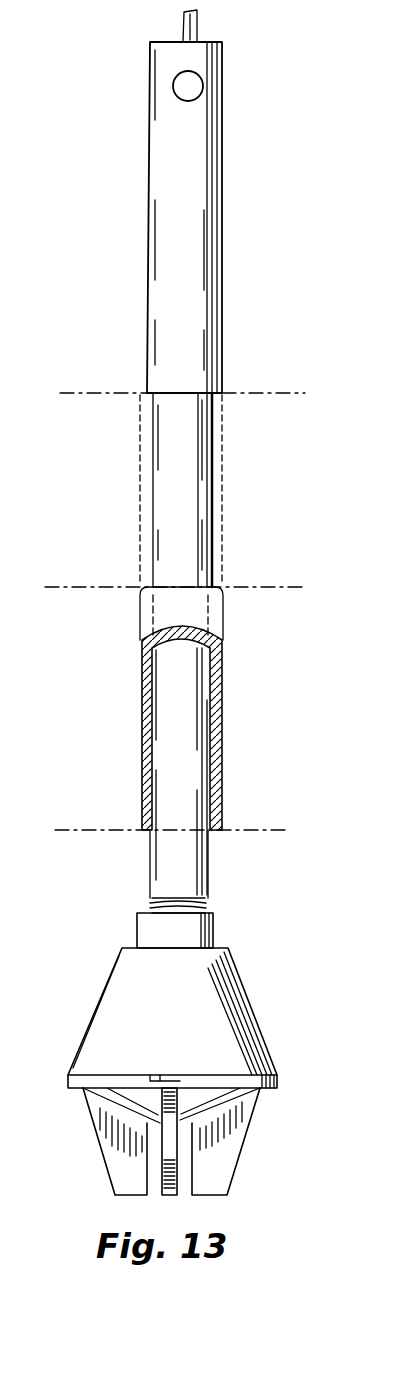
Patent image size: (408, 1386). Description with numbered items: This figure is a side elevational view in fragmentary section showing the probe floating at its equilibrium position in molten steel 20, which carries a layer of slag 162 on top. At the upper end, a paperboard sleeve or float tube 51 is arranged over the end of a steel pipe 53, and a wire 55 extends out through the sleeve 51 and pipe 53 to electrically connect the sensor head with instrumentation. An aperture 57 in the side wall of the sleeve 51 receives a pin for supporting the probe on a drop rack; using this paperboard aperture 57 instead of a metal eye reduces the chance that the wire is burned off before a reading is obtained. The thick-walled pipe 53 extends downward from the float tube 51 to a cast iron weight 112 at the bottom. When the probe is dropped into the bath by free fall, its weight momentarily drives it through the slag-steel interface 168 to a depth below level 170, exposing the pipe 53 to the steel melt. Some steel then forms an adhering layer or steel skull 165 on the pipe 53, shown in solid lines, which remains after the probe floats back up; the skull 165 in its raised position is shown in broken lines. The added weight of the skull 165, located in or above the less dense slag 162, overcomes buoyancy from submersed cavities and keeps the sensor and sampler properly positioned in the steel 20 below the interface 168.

The molten steel 20 is at (290, 735).
The paperboard sleeve or float tube 51 is at (160, 242).
The pipe 53 is at (165, 706).
The wire 55 is at (197, 24).
The aperture 57 is at (176, 92).
The weight 112 is at (200, 1002).
The layer of slag 162 is at (104, 491).
The steel skull 165 is at (224, 475).
The slag-steel interface 168 is at (62, 587).
The level 170 is at (98, 830).